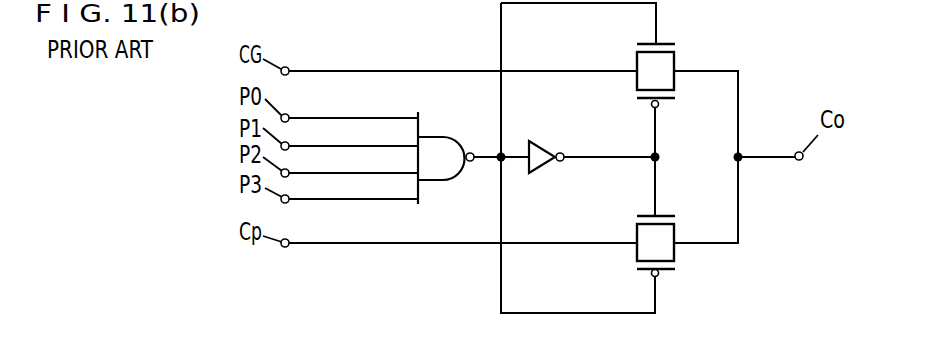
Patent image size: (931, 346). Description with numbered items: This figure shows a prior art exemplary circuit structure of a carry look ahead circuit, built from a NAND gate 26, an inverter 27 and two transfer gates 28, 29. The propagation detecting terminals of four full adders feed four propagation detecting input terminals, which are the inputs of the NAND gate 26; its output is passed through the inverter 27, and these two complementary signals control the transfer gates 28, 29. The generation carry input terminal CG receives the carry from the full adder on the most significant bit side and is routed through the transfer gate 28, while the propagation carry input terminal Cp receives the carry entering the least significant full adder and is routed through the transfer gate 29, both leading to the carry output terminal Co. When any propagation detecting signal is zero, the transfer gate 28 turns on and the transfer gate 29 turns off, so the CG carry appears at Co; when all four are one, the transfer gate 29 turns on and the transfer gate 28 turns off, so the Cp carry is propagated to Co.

The NAND gate 26 is at (445, 145).
The inverter 27 is at (549, 151).
The transfer gate 28 is at (671, 79).
The transfer gate 29 is at (671, 249).